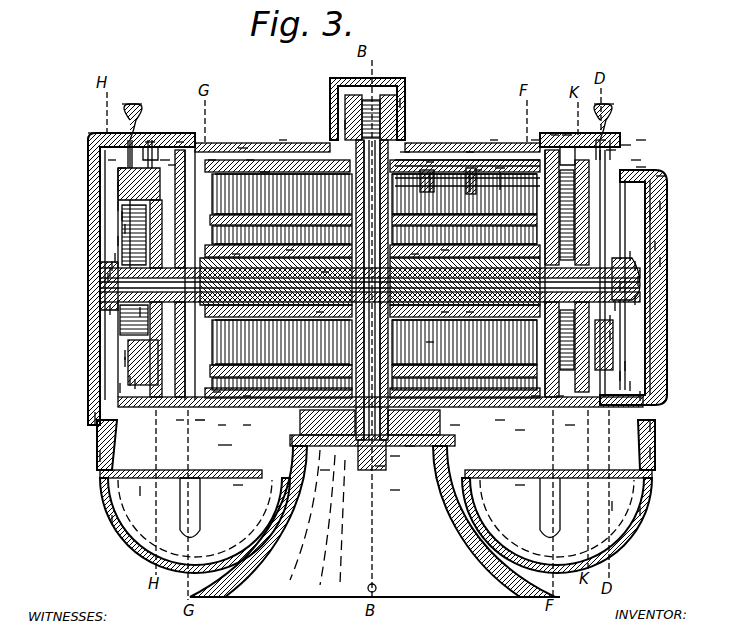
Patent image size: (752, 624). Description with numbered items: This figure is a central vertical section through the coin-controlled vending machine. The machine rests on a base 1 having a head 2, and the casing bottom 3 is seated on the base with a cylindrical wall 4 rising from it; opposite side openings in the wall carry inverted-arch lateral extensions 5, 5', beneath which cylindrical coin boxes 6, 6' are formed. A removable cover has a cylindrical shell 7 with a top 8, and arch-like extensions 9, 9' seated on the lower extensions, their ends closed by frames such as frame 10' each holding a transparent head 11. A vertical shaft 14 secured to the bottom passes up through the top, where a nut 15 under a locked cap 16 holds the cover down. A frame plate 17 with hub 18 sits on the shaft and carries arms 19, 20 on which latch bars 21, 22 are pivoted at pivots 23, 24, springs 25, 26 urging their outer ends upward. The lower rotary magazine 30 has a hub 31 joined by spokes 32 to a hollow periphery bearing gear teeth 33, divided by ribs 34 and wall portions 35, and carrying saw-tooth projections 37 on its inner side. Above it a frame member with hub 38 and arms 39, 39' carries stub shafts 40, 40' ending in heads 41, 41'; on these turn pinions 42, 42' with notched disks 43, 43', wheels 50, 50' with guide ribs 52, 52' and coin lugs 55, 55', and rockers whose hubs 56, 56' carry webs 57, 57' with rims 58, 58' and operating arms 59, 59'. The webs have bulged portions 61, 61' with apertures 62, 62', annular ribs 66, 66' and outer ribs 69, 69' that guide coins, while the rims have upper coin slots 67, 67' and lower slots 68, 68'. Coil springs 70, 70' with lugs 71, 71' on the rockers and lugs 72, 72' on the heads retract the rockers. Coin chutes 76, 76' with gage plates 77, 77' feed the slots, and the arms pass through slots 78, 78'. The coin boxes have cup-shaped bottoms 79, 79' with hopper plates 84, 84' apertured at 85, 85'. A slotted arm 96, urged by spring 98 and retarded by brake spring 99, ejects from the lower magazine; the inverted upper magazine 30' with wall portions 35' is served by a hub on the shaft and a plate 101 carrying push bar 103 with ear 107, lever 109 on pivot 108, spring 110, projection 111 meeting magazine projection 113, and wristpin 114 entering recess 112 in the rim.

The base 1 is at (296, 598).
The head 2 is at (395, 456).
The bottom 3 is at (410, 446).
The cylindrical wall 4 is at (265, 172).
The lateral extension 5 is at (95, 387).
The lateral extension 5' is at (663, 361).
The coin box 6 is at (82, 455).
The coin box 6' is at (664, 452).
The shell 7 is at (243, 148).
The top 8 is at (283, 140).
The arch-like casing extension 9 is at (175, 136).
The arch-like casing extension 9' is at (631, 125).
The frame 10' is at (677, 160).
The transparent head 11 is at (638, 281).
The vertical shaft 14 is at (415, 258).
The nut 15 is at (403, 102).
The cap 16 is at (342, 86).
The frame plate 17 is at (292, 440).
The hub 18 is at (380, 466).
The arm 19 is at (217, 392).
The arm 20 is at (535, 396).
The latch bar 21 is at (222, 425).
The latch bar 22 is at (560, 396).
The pivot 23 is at (247, 396).
The pivot 24 is at (500, 420).
The spring 25 is at (247, 425).
The spring 26 is at (455, 425).
The rotary magazine 30 is at (520, 440).
The upper magazine 30' is at (259, 124).
The hub 31 is at (445, 312).
The spokes 32 is at (320, 312).
The gear teeth 33 is at (470, 312).
The ribs 34 is at (180, 420).
The peripheral wall portions 35 is at (136, 326).
The peripheral wall portions 35' is at (93, 225).
The saw-tooth projections 37 is at (225, 445).
The hub 38 is at (325, 272).
The arm 39 is at (282, 260).
The arm 39' is at (440, 260).
The stub shaft 40 is at (238, 260).
The stub shaft 40' is at (665, 290).
The head 41 is at (87, 315).
The head 41' is at (685, 306).
The pinion 42 is at (87, 252).
The pinion 42' is at (668, 329).
The disk 43 is at (90, 395).
The disk 43' is at (660, 342).
The disk-like wheel 50 is at (167, 120).
The disk-like wheel 50' is at (663, 136).
The guide rib 52 is at (187, 102).
The guide rib 52' is at (570, 435).
The lugs 55 is at (88, 202).
The lugs 55' is at (690, 196).
The rocker hub 56 is at (80, 275).
The rocker hub 56' is at (675, 257).
The web 57 is at (86, 182).
The web 57' is at (673, 380).
The rim 58 is at (89, 161).
The rim 58' is at (678, 398).
The operating arm 59 is at (132, 79).
The operating arm 59' is at (621, 78).
The bulged portion 61 is at (89, 352).
The bulged portion 61' is at (680, 212).
The aperture 62 is at (85, 377).
The aperture 62' is at (683, 365).
The annular guide rib 66 is at (75, 237).
The annular guide rib 66' is at (699, 239).
The coin-slot 67 is at (84, 147).
The coin-slot 67' is at (656, 118).
The slot 68 is at (78, 420).
The slot 68' is at (670, 429).
The guide rib 69 is at (70, 360).
The guide rib 69' is at (652, 153).
The coil spring 70 is at (70, 260).
The coil spring 70' is at (660, 248).
The end lug 71 is at (120, 317).
The end lug 71' is at (658, 313).
The end lug 72 is at (59, 274).
The end lug 72' is at (705, 253).
The coin chute 76 is at (100, 127).
The coin chute 76' is at (627, 107).
The slotted gage plate 77 is at (150, 124).
The slotted gage plate 77' is at (565, 118).
The slot 78 is at (71, 117).
The slot 78' is at (667, 103).
The cup-shaped bottom 79 is at (91, 523).
The cup-shaped bottom 79' is at (660, 503).
The hopper plate 84 is at (231, 495).
The hopper plate 84' is at (527, 495).
The aperture 85 is at (105, 496).
The aperture 85' is at (636, 515).
The slotted arm 96 is at (430, 342).
The spring 98 is at (395, 490).
The brake spring 99 is at (325, 470).
The frame plate 101 is at (470, 152).
The push bar 103 is at (345, 125).
The apertured ear 107 is at (405, 152).
The pivot 108 is at (478, 170).
The lever 109 is at (494, 140).
The spring 110 is at (430, 162).
The projection 111 is at (500, 168).
The recess 112 is at (555, 135).
The projection 113 is at (212, 160).
The wristpin 114 is at (535, 140).